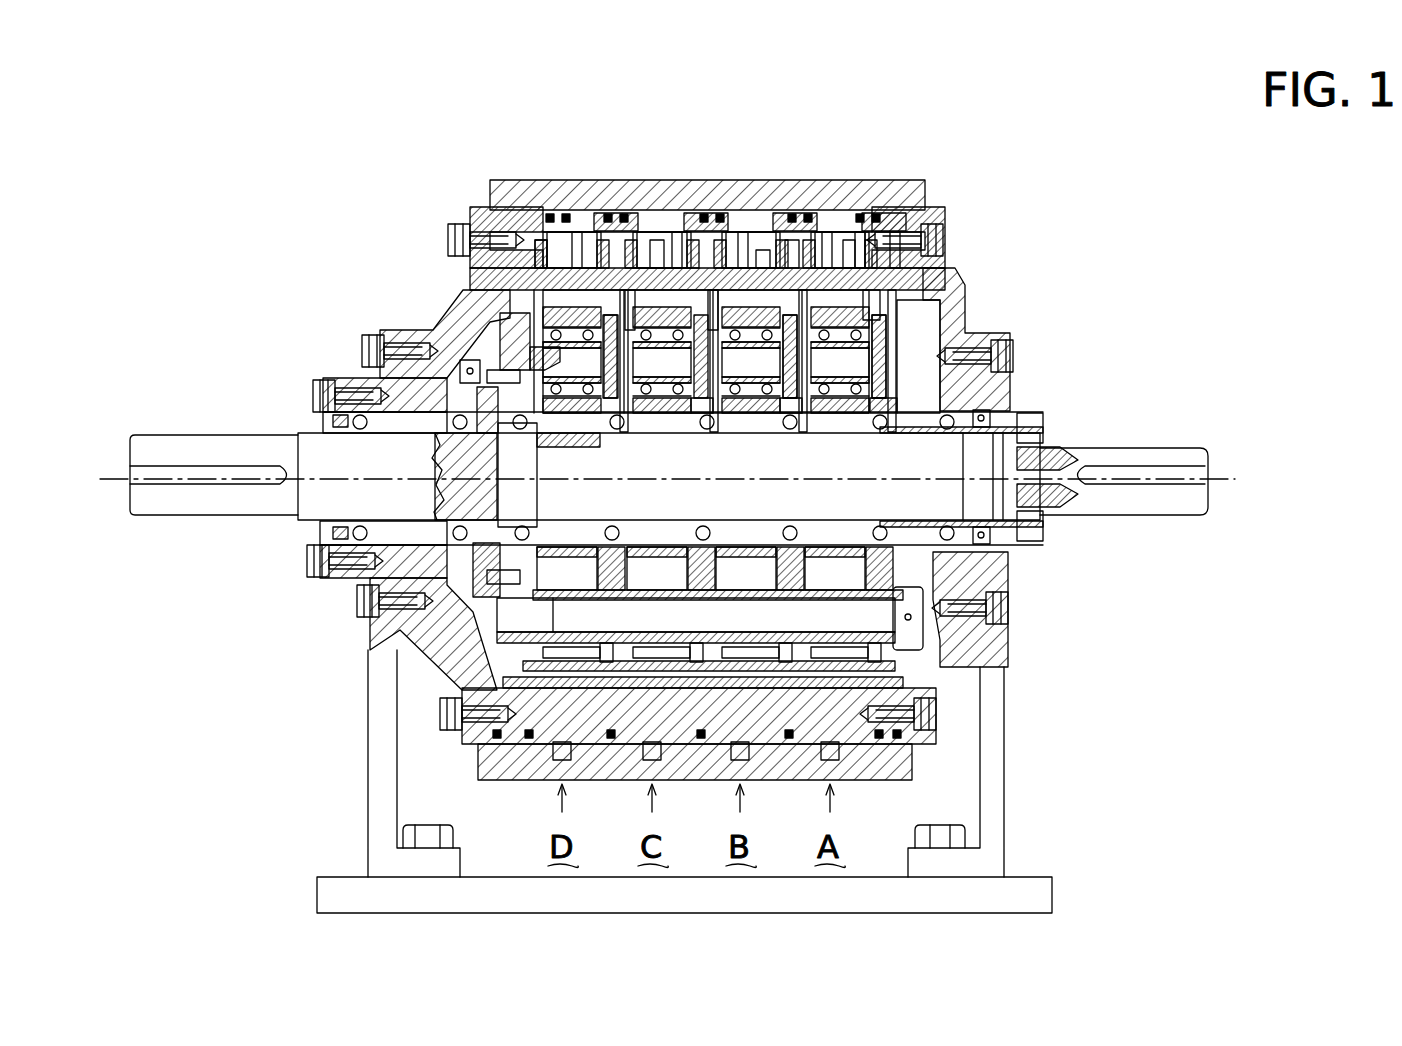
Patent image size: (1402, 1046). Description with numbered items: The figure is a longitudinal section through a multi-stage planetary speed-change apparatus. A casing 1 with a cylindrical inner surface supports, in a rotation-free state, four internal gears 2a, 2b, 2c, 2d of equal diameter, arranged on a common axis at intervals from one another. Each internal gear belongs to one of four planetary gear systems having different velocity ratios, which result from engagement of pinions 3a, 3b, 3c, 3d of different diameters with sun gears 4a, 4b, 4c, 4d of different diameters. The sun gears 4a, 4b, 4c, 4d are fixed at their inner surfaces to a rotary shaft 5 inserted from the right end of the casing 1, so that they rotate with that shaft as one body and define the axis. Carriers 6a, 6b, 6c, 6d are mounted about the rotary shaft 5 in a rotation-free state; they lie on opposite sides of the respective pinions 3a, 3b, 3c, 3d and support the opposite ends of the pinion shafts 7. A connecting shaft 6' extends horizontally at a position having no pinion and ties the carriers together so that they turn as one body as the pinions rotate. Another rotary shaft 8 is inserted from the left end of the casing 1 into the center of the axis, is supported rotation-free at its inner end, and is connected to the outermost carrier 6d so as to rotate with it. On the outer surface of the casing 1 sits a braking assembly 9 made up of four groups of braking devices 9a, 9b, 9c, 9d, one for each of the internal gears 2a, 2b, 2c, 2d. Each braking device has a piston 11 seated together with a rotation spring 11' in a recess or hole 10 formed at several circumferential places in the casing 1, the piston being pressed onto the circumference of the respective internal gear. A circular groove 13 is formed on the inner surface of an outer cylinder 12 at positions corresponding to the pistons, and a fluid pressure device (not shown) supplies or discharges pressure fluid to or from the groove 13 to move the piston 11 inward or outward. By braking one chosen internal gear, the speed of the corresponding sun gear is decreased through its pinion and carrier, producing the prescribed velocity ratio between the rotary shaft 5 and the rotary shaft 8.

The casing 1 is at (470, 214).
The internal gear 2a is at (850, 237).
The internal gear 2b is at (790, 237).
The internal gear 2c is at (663, 230).
The internal gear 2d is at (535, 243).
The pinion 3a is at (870, 302).
The pinion 3b is at (713, 230).
The pinion 3c is at (630, 225).
The pinion 3d is at (535, 300).
The sun gear 4a is at (866, 395).
The sun gear 4b is at (793, 412).
The sun gear 4c is at (703, 412).
The sun gear 4d is at (557, 432).
The rotary shaft 5 is at (1148, 448).
The carrier 6a is at (885, 400).
The carrier 6b is at (790, 400).
The carrier 6c is at (612, 400).
The carrier 6d is at (500, 330).
The connecting shaft 6' is at (664, 632).
The pinion shaft 7 is at (532, 425).
The rotary shaft 8 is at (188, 435).
The braking assembly 9 is at (878, 80).
The braking device 9a is at (844, 110).
The braking device 9b is at (756, 118).
The braking device 9c is at (670, 118).
The braking device 9d is at (581, 118).
The recess or hole 10 is at (577, 237).
The piston 11 is at (764, 189).
The rotation spring 11' is at (929, 196).
The outer cylinder 12 is at (490, 183).
The circular groove 13 is at (763, 263).